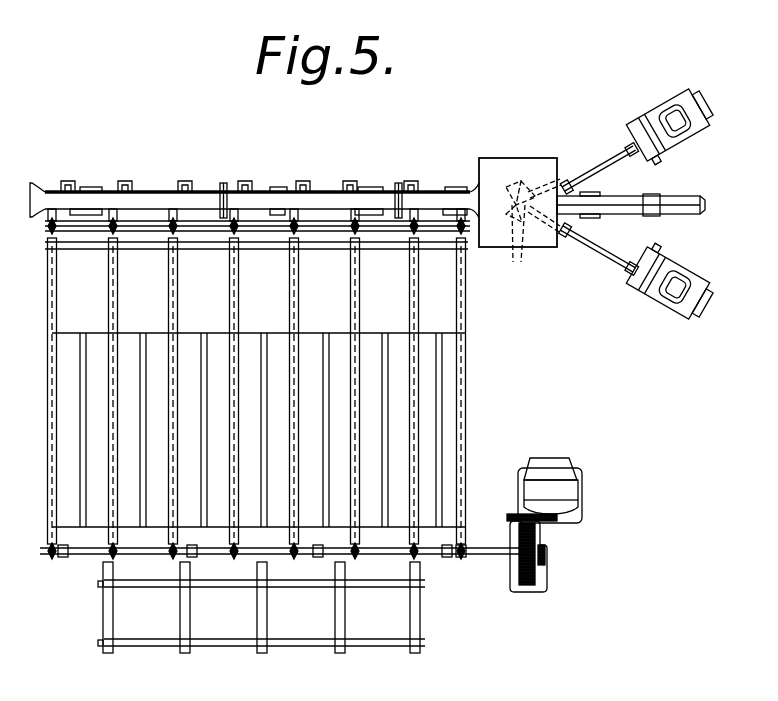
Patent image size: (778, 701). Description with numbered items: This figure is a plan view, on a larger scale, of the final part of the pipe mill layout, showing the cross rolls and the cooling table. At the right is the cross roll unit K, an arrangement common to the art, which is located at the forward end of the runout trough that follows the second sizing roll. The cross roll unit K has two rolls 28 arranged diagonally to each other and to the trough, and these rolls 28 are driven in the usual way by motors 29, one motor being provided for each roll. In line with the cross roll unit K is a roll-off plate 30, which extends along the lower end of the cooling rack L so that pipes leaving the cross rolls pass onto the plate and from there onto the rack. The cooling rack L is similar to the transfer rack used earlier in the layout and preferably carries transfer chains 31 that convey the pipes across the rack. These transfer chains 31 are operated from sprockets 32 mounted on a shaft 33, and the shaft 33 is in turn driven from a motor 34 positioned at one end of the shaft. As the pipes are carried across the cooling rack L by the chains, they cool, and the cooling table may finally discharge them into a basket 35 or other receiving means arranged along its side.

The rolls 28 is at (533, 233).
The motors 29 is at (681, 111).
The roll-off plate 30 is at (322, 197).
The transfer chains 31 is at (109, 287).
The sprockets 32 is at (428, 562).
The shaft 33 is at (481, 556).
The motor 34 is at (560, 473).
The basket 35 is at (386, 632).
The cross roll unit K is at (512, 165).
The cooling rack L is at (442, 402).